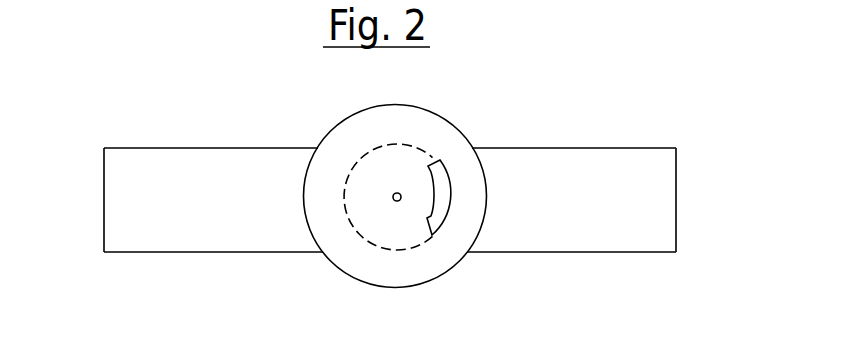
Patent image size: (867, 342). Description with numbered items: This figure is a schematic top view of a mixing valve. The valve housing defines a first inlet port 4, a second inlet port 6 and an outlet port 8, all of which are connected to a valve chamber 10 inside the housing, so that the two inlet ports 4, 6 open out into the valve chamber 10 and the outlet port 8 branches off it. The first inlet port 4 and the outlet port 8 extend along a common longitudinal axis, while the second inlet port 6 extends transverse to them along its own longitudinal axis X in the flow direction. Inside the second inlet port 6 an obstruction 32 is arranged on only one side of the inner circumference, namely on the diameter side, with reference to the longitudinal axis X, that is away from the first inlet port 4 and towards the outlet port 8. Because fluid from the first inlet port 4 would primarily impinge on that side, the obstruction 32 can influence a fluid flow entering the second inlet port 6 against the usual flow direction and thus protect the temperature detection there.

The first inlet port 4 is at (125, 225).
The outlet port 8 is at (663, 195).
The valve chamber 10 is at (403, 118).
The second inlet port 6 is at (372, 245).
The obstruction 32 is at (437, 170).
The longitudinal axis x is at (401, 199).